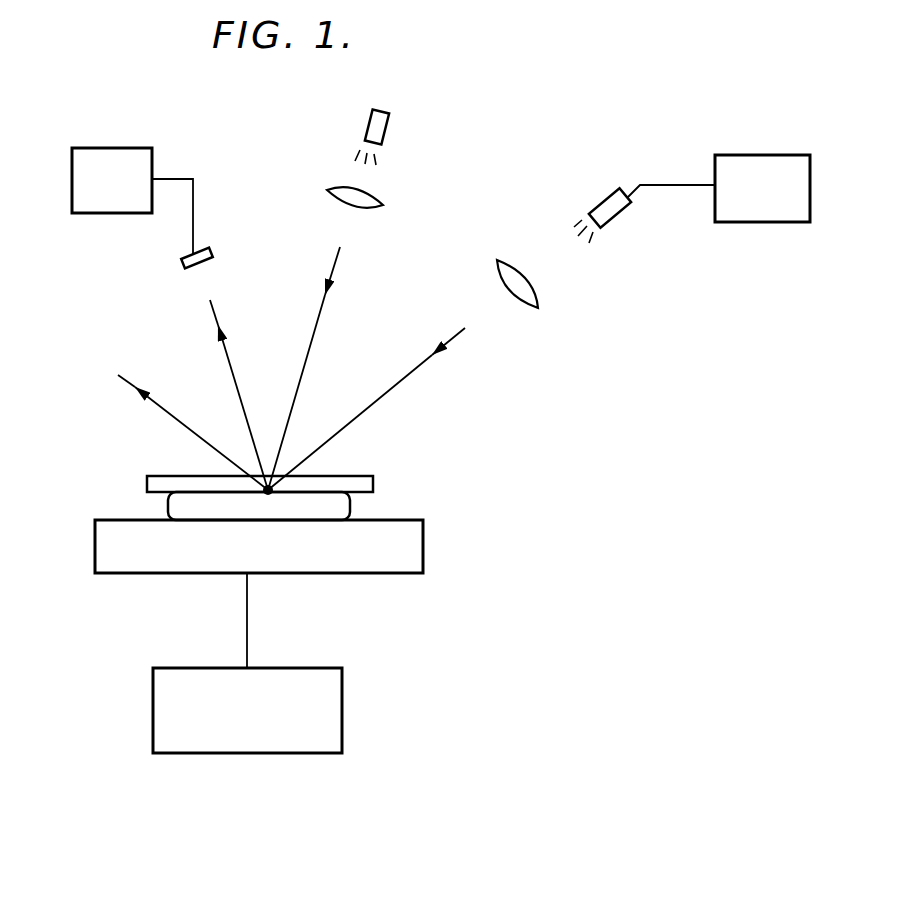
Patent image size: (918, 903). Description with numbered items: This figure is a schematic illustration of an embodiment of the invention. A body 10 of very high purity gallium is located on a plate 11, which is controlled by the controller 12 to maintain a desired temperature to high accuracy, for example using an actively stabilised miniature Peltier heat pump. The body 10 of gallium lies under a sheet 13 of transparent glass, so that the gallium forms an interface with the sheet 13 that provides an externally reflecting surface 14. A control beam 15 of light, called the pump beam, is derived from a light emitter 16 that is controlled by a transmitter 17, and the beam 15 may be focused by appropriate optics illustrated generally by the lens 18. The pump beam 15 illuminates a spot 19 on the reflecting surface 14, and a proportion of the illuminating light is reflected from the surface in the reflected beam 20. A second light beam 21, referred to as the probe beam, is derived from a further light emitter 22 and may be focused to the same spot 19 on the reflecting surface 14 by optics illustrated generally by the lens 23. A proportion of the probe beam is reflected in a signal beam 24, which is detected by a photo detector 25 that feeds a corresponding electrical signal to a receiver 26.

The body 10 is at (170, 500).
The plate 11 is at (95, 548).
The controller 12 is at (153, 702).
The sheet 13 is at (373, 484).
The reflecting surface 14 is at (192, 480).
The control beam 15 is at (408, 377).
The light emitter 16 is at (603, 202).
The transmitter 17 is at (752, 155).
The lens 18 is at (537, 293).
The spot 19 is at (290, 505).
The reflected beam 20 is at (150, 393).
The second light beam 21 is at (318, 332).
The further light emitter 22 is at (388, 125).
The lens 23 is at (372, 201).
The signal beam 24 is at (230, 358).
The photo detector 25 is at (184, 257).
The receiver 26 is at (92, 148).